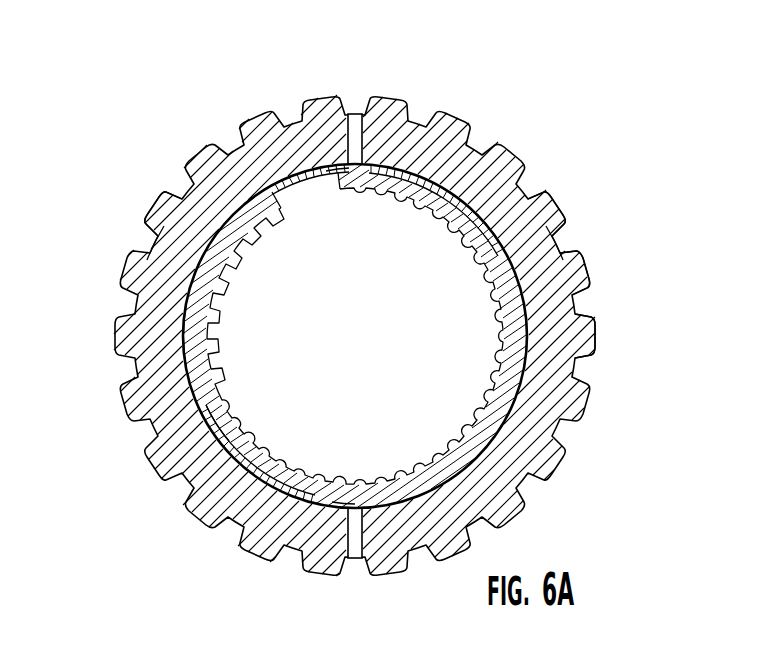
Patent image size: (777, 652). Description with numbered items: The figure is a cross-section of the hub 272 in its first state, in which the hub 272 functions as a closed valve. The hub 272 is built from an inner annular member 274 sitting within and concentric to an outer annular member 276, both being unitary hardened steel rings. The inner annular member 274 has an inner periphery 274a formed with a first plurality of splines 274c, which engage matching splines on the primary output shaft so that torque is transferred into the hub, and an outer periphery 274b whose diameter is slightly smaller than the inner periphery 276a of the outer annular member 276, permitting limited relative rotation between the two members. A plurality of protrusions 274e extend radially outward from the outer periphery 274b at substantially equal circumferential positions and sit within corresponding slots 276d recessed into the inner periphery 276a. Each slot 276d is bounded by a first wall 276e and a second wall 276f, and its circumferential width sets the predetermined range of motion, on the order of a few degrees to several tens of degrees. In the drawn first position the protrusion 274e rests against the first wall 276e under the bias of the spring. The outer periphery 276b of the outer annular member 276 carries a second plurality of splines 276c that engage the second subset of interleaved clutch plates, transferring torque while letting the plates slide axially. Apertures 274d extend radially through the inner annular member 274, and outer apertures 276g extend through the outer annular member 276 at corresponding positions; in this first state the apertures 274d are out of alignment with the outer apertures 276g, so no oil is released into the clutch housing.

The hub 272 is at (578, 73).
The inner annular member 274 is at (457, 190).
The inner periphery 274a is at (215, 340).
The outer periphery 274b is at (190, 330).
The first plurality of splines 274c is at (200, 412).
The apertures 274d is at (333, 162).
The protrusions 274e is at (227, 205).
The outer annular member 276 is at (418, 142).
The inner periphery 276a is at (177, 200).
The outer periphery 276b is at (250, 178).
The second plurality of splines 276c is at (593, 333).
The slots 276d is at (540, 195).
The first wall 276e is at (502, 220).
The second wall 276f is at (557, 243).
The outer apertures 276g is at (355, 114).